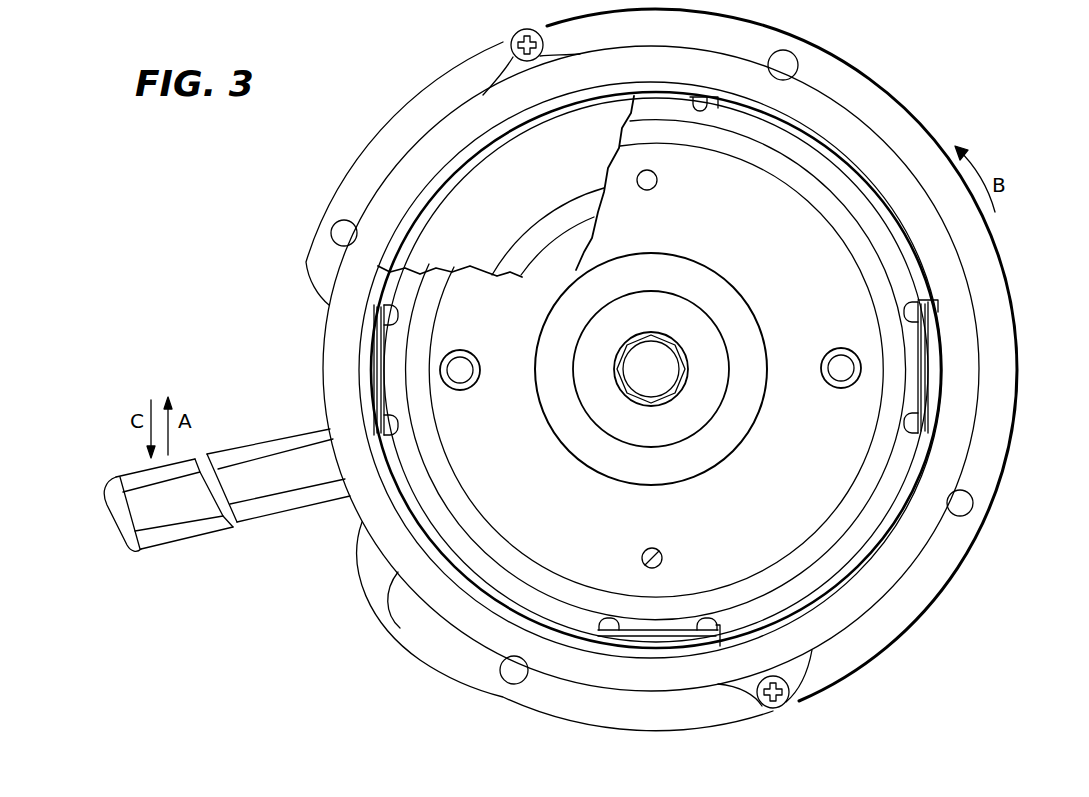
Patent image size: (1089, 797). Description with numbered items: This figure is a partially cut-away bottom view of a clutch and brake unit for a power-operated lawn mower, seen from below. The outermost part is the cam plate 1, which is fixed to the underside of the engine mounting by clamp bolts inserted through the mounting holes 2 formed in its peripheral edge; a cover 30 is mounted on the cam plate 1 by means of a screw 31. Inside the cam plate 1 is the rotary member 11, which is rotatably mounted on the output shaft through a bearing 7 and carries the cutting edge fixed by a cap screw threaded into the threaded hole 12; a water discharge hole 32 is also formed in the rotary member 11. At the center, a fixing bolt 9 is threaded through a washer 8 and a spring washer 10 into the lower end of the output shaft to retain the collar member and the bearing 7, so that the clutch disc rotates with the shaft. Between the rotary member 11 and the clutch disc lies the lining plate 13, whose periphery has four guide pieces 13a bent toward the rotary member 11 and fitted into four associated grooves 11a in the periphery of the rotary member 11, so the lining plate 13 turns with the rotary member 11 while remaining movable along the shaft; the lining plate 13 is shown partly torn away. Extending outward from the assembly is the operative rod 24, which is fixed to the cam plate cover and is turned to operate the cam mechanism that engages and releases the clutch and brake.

The cam plate 1 is at (757, 38).
The mounting holes 2 is at (796, 60).
The bearing 7 is at (690, 275).
The washer 8 is at (692, 322).
The fixing bolt 9 is at (664, 373).
The spring washer 10 is at (678, 352).
The rotary member 11 is at (893, 503).
The grooves 11a is at (925, 378).
The threaded hole 12 is at (835, 378).
The lining plate 13 is at (473, 258).
The guide pieces 13a is at (596, 105).
The operative rod 24 is at (268, 468).
The cover 30 is at (683, 688).
The screw 31 is at (790, 698).
The water discharge hole 32 is at (662, 556).